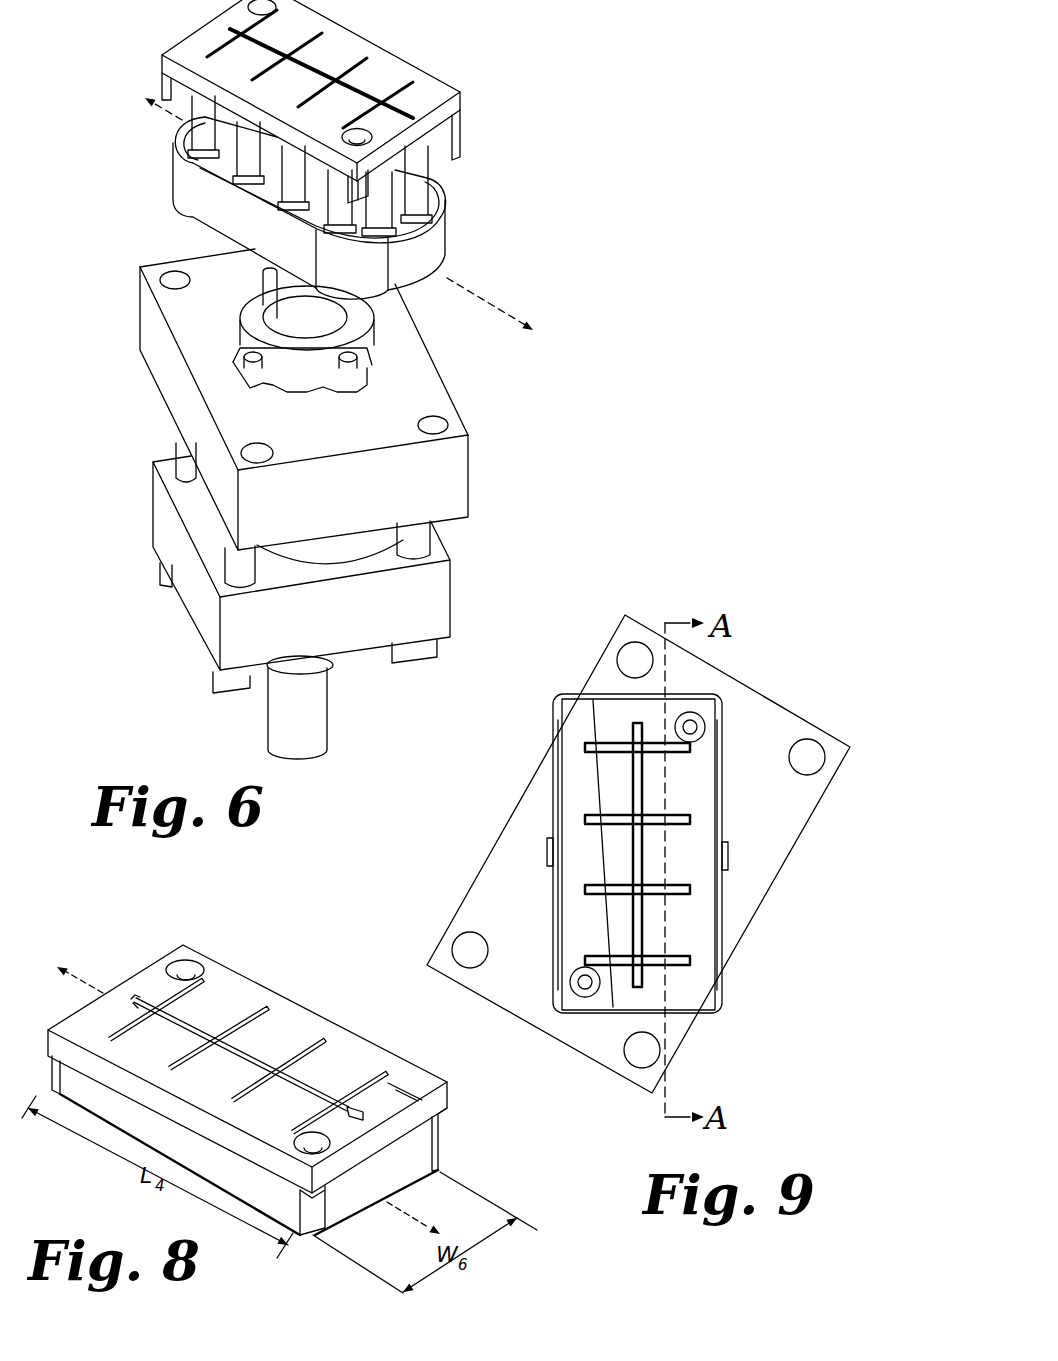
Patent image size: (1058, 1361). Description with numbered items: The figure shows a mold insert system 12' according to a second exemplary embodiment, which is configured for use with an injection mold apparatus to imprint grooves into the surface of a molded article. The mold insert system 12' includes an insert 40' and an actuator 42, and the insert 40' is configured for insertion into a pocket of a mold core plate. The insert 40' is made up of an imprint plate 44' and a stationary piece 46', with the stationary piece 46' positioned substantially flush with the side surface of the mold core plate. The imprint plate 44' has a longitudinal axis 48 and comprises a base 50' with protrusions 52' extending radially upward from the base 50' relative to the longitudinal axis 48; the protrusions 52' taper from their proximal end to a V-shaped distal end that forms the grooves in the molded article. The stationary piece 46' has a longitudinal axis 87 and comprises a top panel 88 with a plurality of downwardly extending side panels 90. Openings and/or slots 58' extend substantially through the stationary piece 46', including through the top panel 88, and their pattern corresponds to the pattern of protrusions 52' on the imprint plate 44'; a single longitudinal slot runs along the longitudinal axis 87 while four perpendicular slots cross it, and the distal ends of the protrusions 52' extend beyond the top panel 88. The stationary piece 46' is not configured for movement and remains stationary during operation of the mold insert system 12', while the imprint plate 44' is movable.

In FIG. 6, the mold insert system 12' is at (337, 379).
In FIG. 6, the insert 40' is at (313, 172).
In FIG. 9, the insert 40' is at (639, 853).
In FIG. 6, the actuator 42 is at (140, 296).
In FIG. 6, the imprint plate 44' is at (350, 220).
In FIG. 9, the imprint plate 44' is at (637, 853).
In FIG. 6, the stationary piece 46' is at (364, 101).
In FIG. 9, the stationary piece 46' is at (707, 854).
In FIG. 8, the stationary piece 46' is at (251, 1072).
In FIG. 6, the longitudinal axis 48 is at (487, 303).
In FIG. 6, the base 50' is at (398, 272).
In FIG. 6, the protrusions 52' is at (356, 166).
In FIG. 8, the openings and/or slots 58' is at (416, 1052).
In FIG. 8, the longitudinal axis 87 is at (99, 982).
In FIG. 6, the top panel 88 is at (398, 50).
In FIG. 9, the top panel 88 is at (591, 803).
In FIG. 8, the top panel 88 is at (258, 1004).
In FIG. 6, the side panels 90 is at (442, 127).
In FIG. 8, the side panels 90 is at (164, 1117).